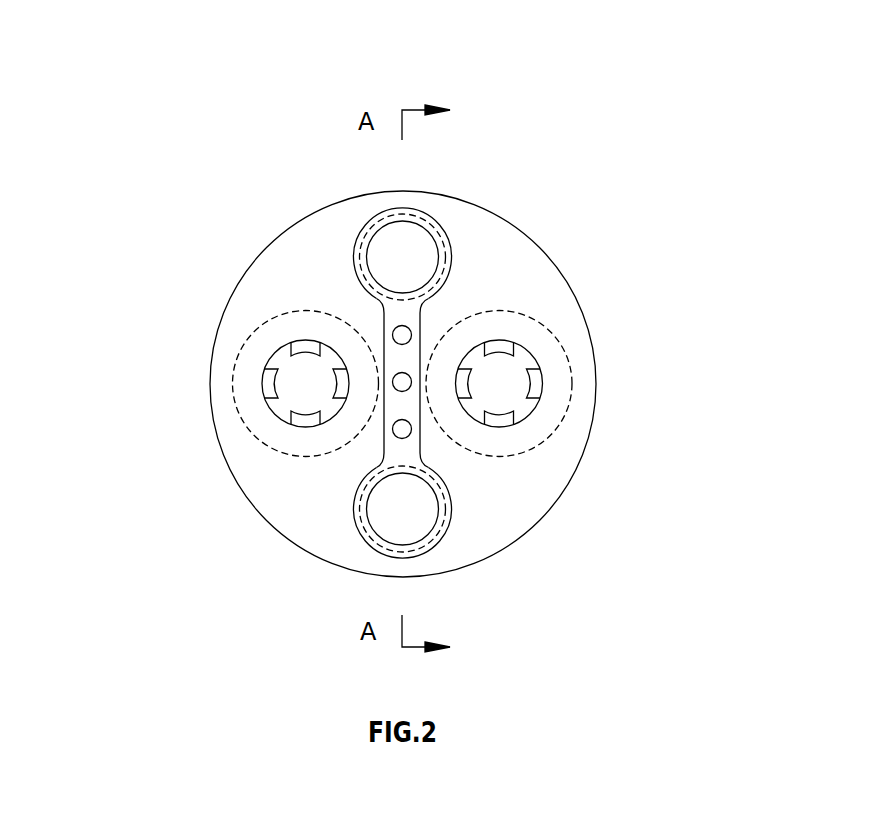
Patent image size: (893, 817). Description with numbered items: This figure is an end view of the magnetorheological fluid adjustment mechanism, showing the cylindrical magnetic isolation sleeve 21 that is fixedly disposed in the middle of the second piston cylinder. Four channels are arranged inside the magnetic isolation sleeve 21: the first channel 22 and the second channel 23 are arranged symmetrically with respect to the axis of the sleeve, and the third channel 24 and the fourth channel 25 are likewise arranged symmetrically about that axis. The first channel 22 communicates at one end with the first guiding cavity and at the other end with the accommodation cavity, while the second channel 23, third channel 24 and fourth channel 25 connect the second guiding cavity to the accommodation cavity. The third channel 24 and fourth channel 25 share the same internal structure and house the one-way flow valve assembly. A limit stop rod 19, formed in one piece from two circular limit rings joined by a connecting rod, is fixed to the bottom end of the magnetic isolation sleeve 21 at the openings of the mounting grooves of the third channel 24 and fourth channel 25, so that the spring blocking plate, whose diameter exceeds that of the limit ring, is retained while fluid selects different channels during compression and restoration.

The limit stop rod 19 is at (404, 452).
The magnetic isolation sleeve 21 is at (508, 253).
The first channel 22 is at (499, 383).
The second channel 23 is at (305, 385).
The third channel 24 is at (402, 507).
The fourth channel 25 is at (402, 249).